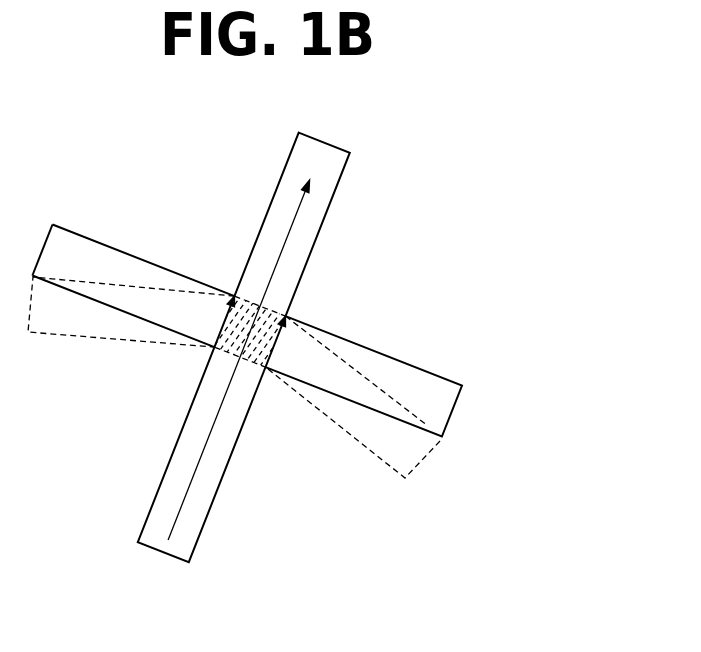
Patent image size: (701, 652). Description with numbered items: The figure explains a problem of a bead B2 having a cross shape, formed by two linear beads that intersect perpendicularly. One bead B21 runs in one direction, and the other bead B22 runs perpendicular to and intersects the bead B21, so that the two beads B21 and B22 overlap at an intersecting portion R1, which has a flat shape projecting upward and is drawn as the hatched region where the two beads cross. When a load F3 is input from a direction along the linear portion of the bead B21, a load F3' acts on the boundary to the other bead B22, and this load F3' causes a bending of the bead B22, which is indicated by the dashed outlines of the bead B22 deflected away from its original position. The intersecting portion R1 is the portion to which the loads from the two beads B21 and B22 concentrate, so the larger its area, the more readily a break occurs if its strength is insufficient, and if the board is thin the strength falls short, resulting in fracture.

The bead B2 is at (186, 140).
The bead B21 is at (320, 138).
The bead B22 is at (452, 412).
The intersecting portion R1 is at (247, 368).
The load F3 is at (239, 366).
The load F3' is at (264, 321).